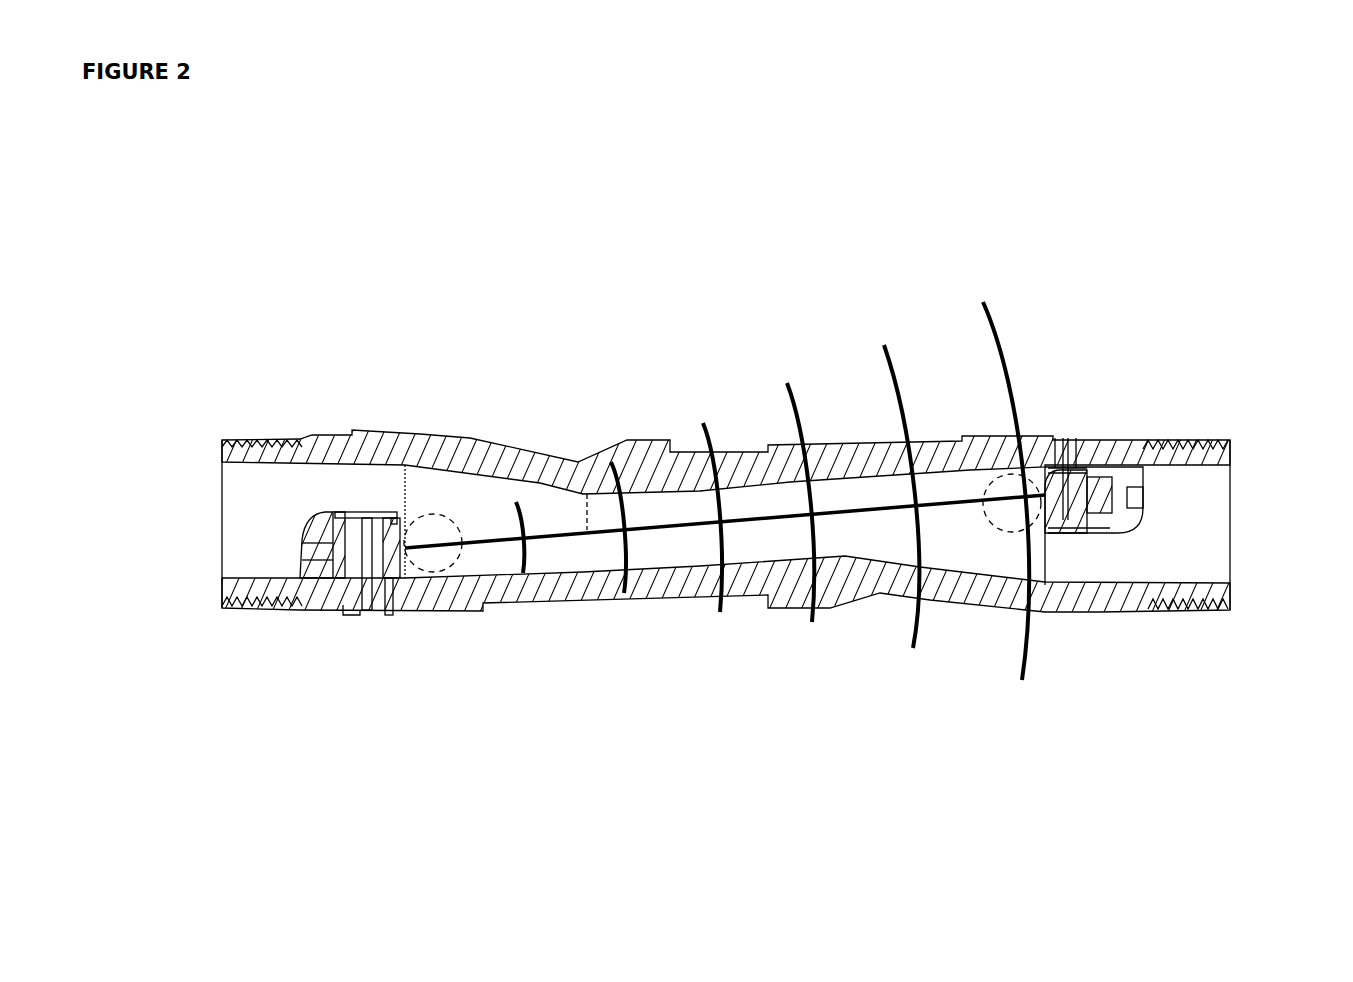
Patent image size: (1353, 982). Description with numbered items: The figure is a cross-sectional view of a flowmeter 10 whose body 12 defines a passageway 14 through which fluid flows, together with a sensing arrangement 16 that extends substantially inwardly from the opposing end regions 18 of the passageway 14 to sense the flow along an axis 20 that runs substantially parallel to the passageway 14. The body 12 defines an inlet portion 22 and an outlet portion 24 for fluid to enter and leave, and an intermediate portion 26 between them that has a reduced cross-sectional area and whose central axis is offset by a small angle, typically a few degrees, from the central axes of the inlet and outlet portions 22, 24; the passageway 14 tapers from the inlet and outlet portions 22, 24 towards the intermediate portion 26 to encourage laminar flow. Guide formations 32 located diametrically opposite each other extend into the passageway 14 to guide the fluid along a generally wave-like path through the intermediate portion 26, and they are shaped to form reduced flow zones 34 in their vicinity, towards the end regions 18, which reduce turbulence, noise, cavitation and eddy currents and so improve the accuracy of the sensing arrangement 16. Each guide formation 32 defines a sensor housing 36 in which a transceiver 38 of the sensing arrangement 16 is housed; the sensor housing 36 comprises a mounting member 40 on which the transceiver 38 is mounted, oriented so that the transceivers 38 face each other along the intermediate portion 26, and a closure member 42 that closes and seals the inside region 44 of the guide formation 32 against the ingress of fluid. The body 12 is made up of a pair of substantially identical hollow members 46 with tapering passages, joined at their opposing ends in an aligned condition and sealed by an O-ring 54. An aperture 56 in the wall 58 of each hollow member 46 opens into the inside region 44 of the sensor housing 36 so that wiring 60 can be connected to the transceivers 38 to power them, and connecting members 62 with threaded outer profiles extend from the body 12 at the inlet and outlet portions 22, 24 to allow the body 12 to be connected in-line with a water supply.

The flowmeter 10 is at (350, 228).
The body 12 is at (726, 481).
The passageway 14 is at (752, 616).
The sensing arrangement 16 is at (1110, 656).
The end regions 18 is at (720, 542).
The axis 20 is at (725, 463).
The inlet portion 22 is at (199, 517).
The outlet portion 24 is at (1263, 535).
The intermediate portion 26 is at (645, 646).
The guide formations 32 is at (740, 515).
The reduced flow zones 34 is at (722, 533).
The sensor housings 36 is at (740, 478).
The transceivers 38 is at (729, 527).
The mounting member 40 is at (408, 523).
The closure member 42 is at (707, 531).
The inside region 44 is at (687, 590).
The hollow members 46 is at (746, 536).
The O-ring 54 is at (786, 491).
The aperture 56 is at (732, 534).
The wall 58 is at (441, 599).
The wiring 60 is at (730, 526).
The connecting members 62 is at (732, 501).